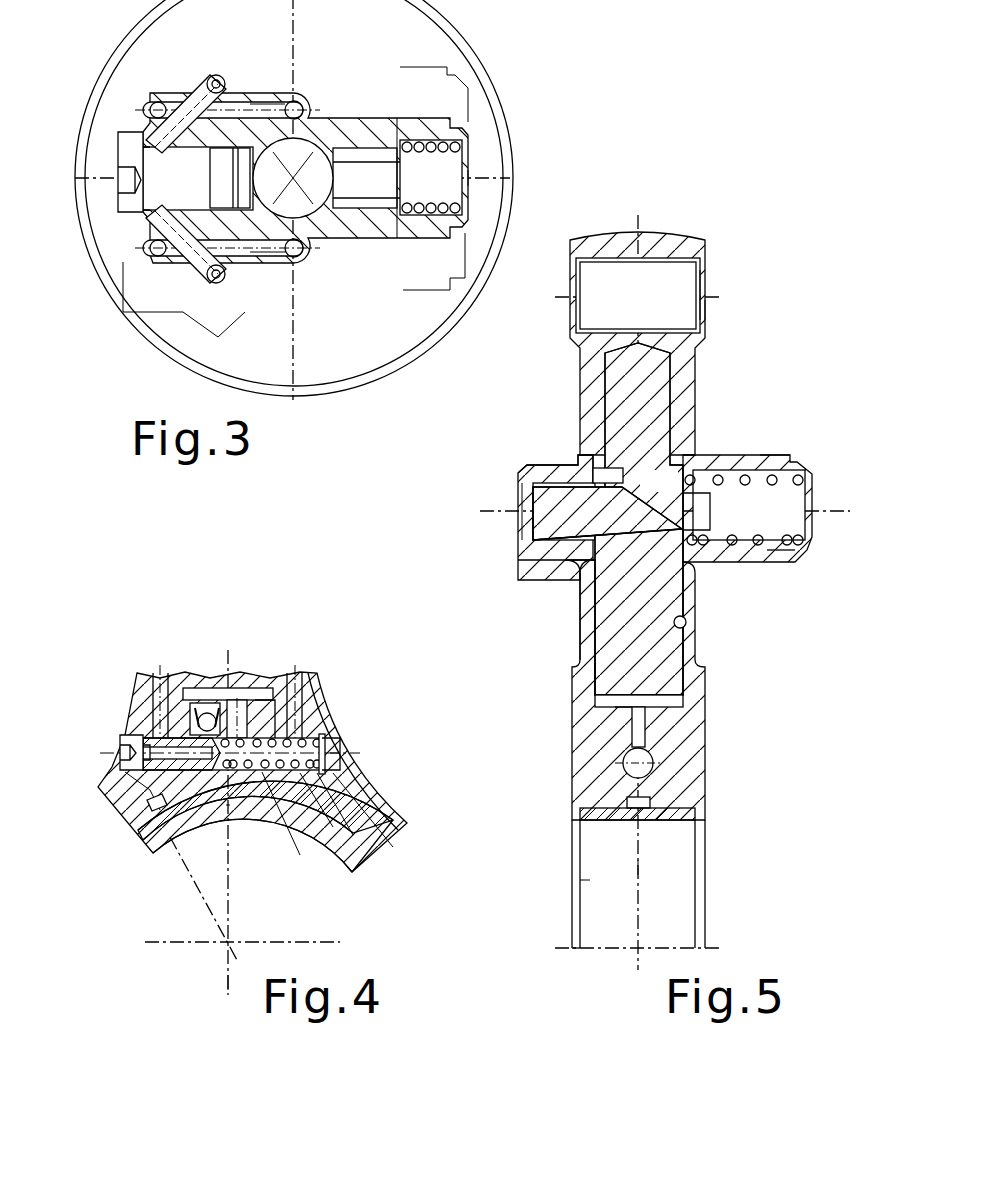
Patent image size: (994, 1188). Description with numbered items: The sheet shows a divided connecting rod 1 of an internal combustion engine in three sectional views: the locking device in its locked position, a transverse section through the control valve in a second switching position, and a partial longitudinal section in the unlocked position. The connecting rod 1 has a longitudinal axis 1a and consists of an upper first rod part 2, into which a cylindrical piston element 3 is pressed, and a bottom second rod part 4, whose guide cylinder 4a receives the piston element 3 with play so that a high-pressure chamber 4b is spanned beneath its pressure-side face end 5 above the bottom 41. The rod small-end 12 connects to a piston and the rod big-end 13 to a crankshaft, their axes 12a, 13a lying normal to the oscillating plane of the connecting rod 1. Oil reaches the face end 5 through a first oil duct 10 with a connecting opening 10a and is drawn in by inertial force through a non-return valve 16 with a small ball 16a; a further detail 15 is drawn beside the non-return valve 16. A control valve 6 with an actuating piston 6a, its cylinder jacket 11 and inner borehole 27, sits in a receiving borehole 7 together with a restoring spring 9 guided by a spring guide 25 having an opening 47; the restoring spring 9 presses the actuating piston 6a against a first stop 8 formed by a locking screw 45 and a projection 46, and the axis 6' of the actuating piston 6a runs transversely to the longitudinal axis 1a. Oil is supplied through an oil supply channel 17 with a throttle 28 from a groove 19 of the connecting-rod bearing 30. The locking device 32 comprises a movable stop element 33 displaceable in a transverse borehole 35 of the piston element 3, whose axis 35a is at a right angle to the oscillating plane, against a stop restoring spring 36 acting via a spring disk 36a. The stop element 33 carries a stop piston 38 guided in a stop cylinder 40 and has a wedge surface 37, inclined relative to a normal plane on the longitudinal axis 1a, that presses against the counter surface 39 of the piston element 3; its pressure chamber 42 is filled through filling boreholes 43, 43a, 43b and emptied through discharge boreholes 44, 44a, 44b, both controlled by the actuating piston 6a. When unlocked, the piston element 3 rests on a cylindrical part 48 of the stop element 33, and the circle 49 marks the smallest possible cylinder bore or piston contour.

In FIG. 5, the connecting rod 1 is at (717, 318).
In FIG. 4, the longitudinal axis 1a is at (228, 980).
In FIG. 5, the longitudinal axis 1a is at (640, 867).
In FIG. 5, the first rod part 2 is at (680, 365).
In FIG. 3, the piston element 3 is at (338, 235).
In FIG. 5, the piston element 3 is at (610, 657).
In FIG. 3, the second rod part 4 is at (410, 130).
In FIG. 5, the second rod part 4 is at (695, 675).
In FIG. 5, the guide cylinder 4a is at (684, 627).
In FIG. 5, the high-pressure chamber 4b is at (663, 700).
In FIG. 5, the face end 5 is at (617, 703).
In FIG. 4, the control valve 6 is at (230, 795).
In FIG. 4, the bolt axis 6' is at (379, 768).
In FIG. 4, the actuating piston 6a is at (263, 773).
In FIG. 5, the receiving borehole 7 is at (660, 768).
In FIG. 4, the first stop 8 is at (150, 747).
In FIG. 4, the restoring spring 9 is at (333, 743).
In FIG. 4, the first oil duct 10 is at (300, 725).
In FIG. 5, the first oil duct 10 is at (647, 728).
In FIG. 4, the connecting opening 10a is at (265, 737).
In FIG. 5, the connecting opening 10a is at (582, 810).
In FIG. 4, the cylinder jacket 11 is at (230, 812).
In FIG. 5, the rod small-end 12 is at (595, 282).
In FIG. 5, the axis of rod small-end 12a is at (680, 295).
In FIG. 5, the rod big-end 13 is at (670, 860).
In FIG. 5, the axis of rod big-end 13a is at (595, 948).
In FIG. 4, the ball detent 15 is at (213, 722).
In FIG. 4, the non-return valve 16 is at (232, 686).
In FIG. 4, the small ball 16a is at (203, 722).
In FIG. 4, the oil supply channel 17 is at (150, 767).
In FIG. 5, the groove 19 is at (655, 815).
In FIG. 4, the spring guide 25 is at (333, 771).
In FIG. 4, the inner borehole 27 is at (200, 806).
In FIG. 4, the throttle 28 is at (153, 812).
In FIG. 4, the connecting-rod bearing 30 is at (340, 873).
In FIG. 5, the connecting-rod bearing 30 is at (603, 888).
In FIG. 3, the locking device 32 is at (313, 173).
In FIG. 5, the locking device 32 is at (553, 552).
In FIG. 3, the stop element 33 is at (340, 140).
In FIG. 5, the stop element 33 is at (567, 497).
In FIG. 5, the transverse borehole 35 is at (683, 483).
In FIG. 3, the axis of transverse borehole 35a is at (485, 173).
In FIG. 5, the axis of transverse borehole 35a is at (483, 505).
In FIG. 3, the stop restoring spring 36 is at (430, 213).
In FIG. 5, the stop restoring spring 36 is at (790, 563).
In FIG. 5, the spring disk 36a is at (760, 458).
In FIG. 5, the wedge surface 37 is at (580, 542).
In FIG. 3, the stop piston 38 is at (234, 205).
In FIG. 5, the counter surface 39 is at (695, 460).
In FIG. 5, the stop cylinder 40 is at (565, 500).
In FIG. 5, the bottom of high-pressure chamber 41 is at (603, 715).
In FIG. 3, the pressure chamber 42 is at (178, 167).
In FIG. 3, the filling borehole 43 is at (307, 267).
In FIG. 3, the filling borehole 43a is at (237, 262).
In FIG. 3, the filling borehole 43b is at (197, 272).
In FIG. 3, the discharge borehole 44 is at (300, 103).
In FIG. 4, the discharge borehole 44 is at (310, 738).
In FIG. 3, the discharge borehole 44a is at (262, 107).
In FIG. 3, the discharge borehole 44b is at (205, 100).
In FIG. 4, the locking screw 45 is at (123, 740).
In FIG. 4, the projection 46 is at (143, 757).
In FIG. 4, the opening 47 is at (333, 748).
In FIG. 5, the cylindrical part 48 is at (702, 550).
In FIG. 3, the circle 49 is at (353, 389).